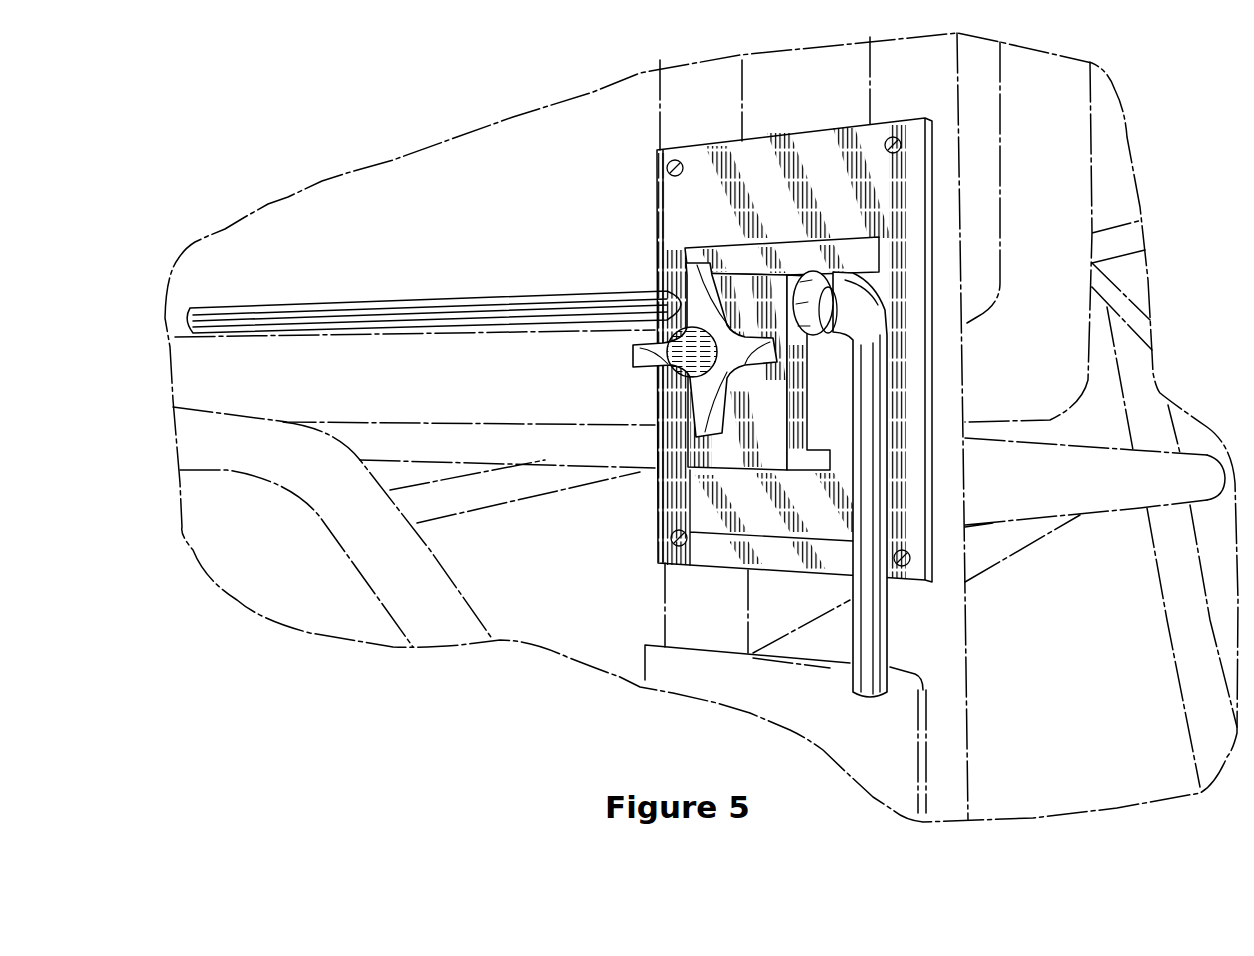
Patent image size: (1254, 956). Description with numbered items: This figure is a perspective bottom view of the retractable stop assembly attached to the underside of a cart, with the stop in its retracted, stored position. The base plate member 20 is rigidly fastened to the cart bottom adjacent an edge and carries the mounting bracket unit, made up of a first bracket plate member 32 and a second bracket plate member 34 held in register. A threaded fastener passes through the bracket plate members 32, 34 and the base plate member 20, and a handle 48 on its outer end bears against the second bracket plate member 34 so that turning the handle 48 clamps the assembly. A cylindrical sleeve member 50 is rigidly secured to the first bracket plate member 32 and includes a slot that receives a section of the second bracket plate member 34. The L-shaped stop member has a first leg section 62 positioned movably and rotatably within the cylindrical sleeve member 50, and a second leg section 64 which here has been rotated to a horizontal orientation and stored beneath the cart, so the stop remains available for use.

The base plate member 20 is at (795, 148).
The first bracket plate member 32 is at (798, 253).
The second bracket plate member 34 is at (749, 450).
The handle 48 is at (658, 375).
The cylindrical sleeve member 50 is at (825, 270).
The first leg section 62 is at (381, 307).
The second leg section 64 is at (877, 642).